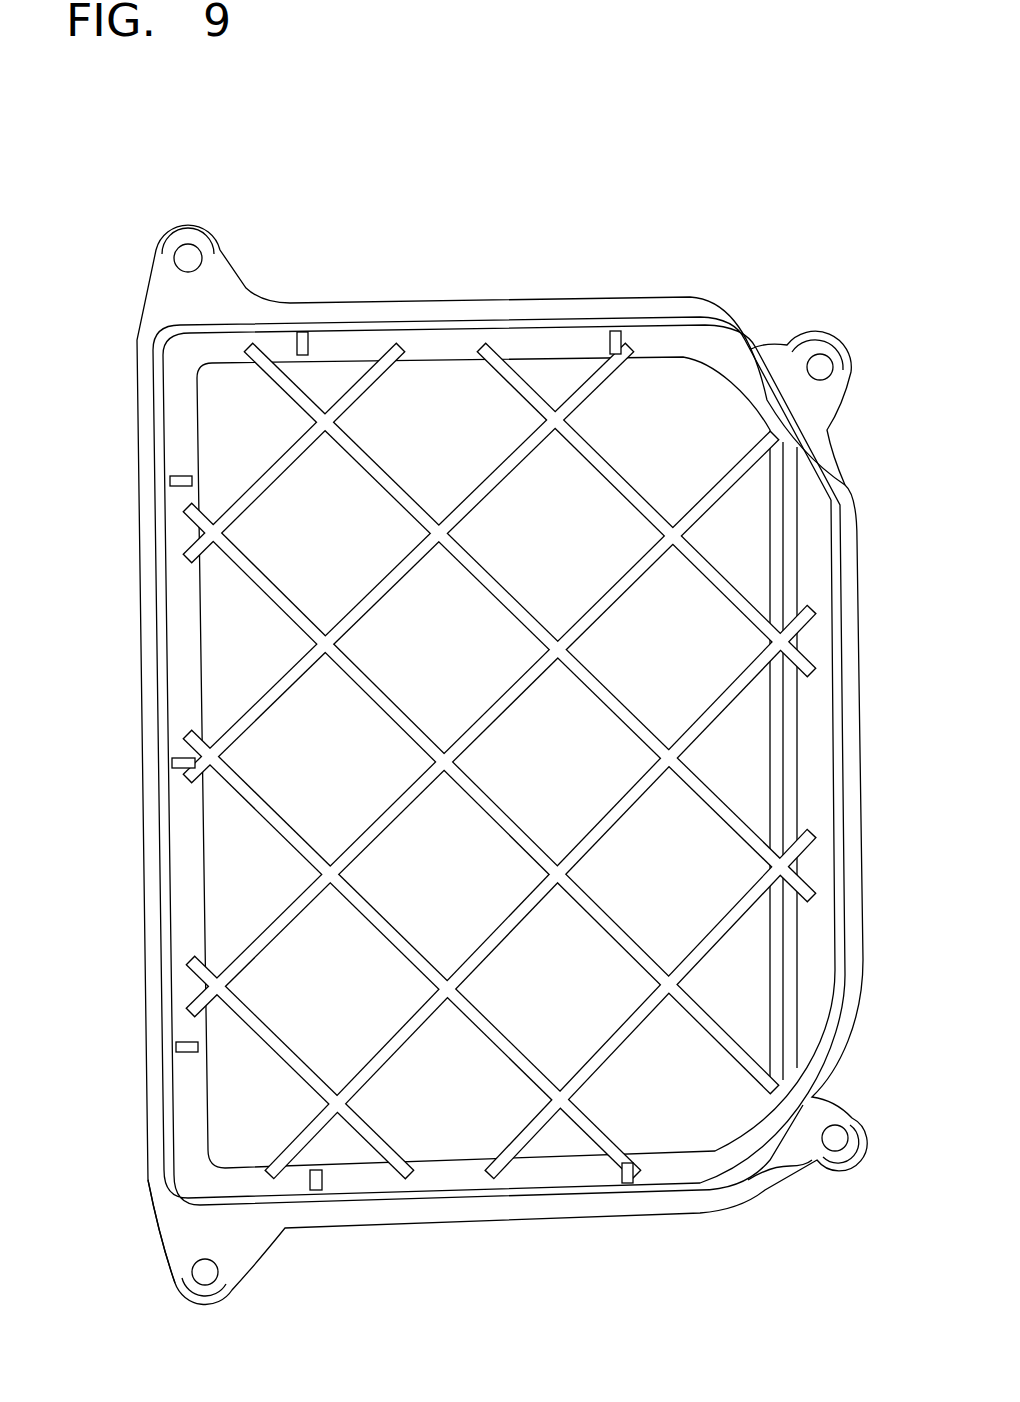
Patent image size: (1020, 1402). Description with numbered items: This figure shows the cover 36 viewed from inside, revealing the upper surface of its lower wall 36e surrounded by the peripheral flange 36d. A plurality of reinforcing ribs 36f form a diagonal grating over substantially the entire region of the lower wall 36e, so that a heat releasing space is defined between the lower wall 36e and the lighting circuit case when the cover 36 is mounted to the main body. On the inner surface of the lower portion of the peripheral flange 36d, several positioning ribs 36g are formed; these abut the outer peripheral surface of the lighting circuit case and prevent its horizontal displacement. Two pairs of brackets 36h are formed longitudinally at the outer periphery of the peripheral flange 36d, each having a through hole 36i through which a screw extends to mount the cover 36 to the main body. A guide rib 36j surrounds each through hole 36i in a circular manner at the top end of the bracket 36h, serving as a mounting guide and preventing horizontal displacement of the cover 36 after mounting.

The cover 36 is at (124, 512).
The peripheral flange 36d is at (165, 690).
The lower wall 36e is at (237, 880).
The reinforcing ribs 36f is at (488, 717).
The positioning ribs 36g is at (317, 1173).
The brackets 36h is at (185, 1237).
The through hole 36i is at (195, 1283).
The guide rib 36j is at (222, 1302).